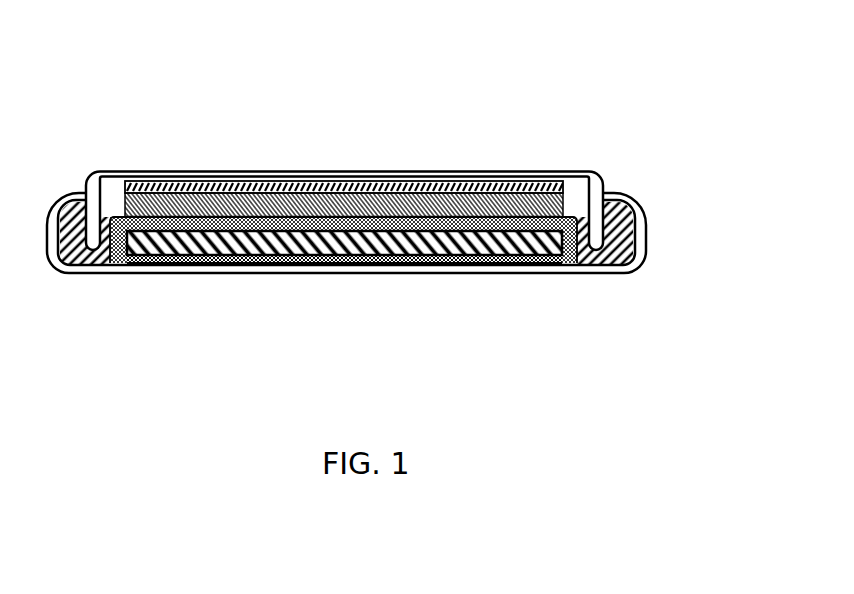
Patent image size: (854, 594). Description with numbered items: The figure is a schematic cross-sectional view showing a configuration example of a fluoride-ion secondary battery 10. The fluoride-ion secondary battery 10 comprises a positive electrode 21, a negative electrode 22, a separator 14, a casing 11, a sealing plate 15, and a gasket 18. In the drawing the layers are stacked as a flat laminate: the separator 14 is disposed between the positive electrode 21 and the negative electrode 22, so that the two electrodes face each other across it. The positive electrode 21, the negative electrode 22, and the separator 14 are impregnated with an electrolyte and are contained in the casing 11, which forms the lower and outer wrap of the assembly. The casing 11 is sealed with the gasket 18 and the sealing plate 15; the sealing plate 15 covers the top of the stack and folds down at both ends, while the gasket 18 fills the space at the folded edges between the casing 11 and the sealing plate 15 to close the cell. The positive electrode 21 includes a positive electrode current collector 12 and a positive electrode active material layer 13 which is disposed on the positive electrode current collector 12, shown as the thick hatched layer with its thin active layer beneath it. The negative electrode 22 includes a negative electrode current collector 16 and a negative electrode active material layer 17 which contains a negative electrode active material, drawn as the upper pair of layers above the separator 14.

The fluoride-ion secondary battery 10 is at (365, 218).
The casing 11 is at (173, 267).
The positive electrode current collector 12 is at (445, 363).
The positive electrode active material layer 13 is at (473, 262).
The separator 14 is at (568, 182).
The sealing plate 15 is at (143, 176).
The negative electrode current collector 16 is at (267, 90).
The negative electrode active material layer 17 is at (262, 200).
The gasket 18 is at (612, 266).
The positive electrode 21 is at (344, 324).
The negative electrode 22 is at (344, 135).